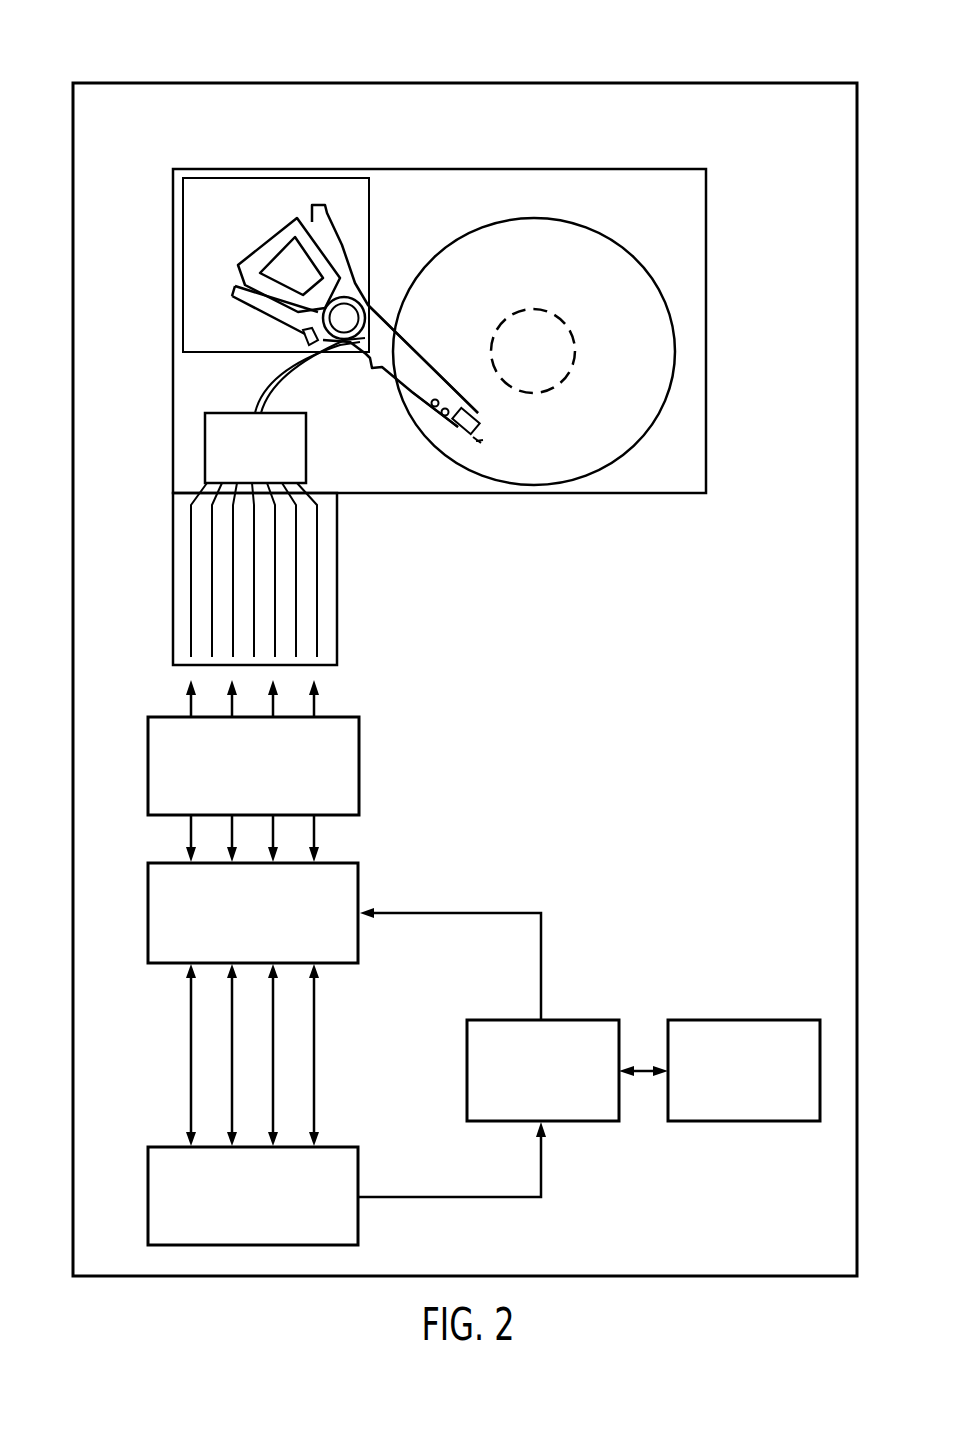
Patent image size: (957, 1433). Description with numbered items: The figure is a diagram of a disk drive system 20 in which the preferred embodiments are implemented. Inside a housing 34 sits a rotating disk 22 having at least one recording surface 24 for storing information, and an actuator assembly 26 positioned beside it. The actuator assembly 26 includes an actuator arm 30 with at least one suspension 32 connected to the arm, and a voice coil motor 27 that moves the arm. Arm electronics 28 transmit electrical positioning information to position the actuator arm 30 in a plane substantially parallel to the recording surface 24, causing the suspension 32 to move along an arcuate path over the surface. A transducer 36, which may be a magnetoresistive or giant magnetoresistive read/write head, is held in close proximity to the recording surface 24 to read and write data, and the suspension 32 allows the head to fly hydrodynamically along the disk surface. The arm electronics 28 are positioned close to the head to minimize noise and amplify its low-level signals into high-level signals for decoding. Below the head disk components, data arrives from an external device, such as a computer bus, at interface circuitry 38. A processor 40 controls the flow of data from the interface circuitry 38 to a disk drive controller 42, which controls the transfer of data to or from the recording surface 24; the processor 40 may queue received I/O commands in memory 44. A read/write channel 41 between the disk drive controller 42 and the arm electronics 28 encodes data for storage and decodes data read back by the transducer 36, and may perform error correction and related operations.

The disk drive system 20 is at (216, 64).
The rotating disk 22 is at (677, 350).
The recording surface 24 is at (593, 323).
The actuator assembly 26 is at (212, 255).
The voice coil motor 27 is at (262, 237).
The arm electronics 28 is at (212, 444).
The actuator arm 30 is at (317, 205).
The suspension 32 is at (392, 382).
The housing 34 is at (684, 168).
The transducer 36 is at (473, 440).
The interface circuitry 38 is at (358, 1228).
The processor 40 is at (589, 1018).
The read/write channel 41 is at (360, 770).
The disk drive controller 42 is at (360, 888).
The memory 44 is at (744, 1018).